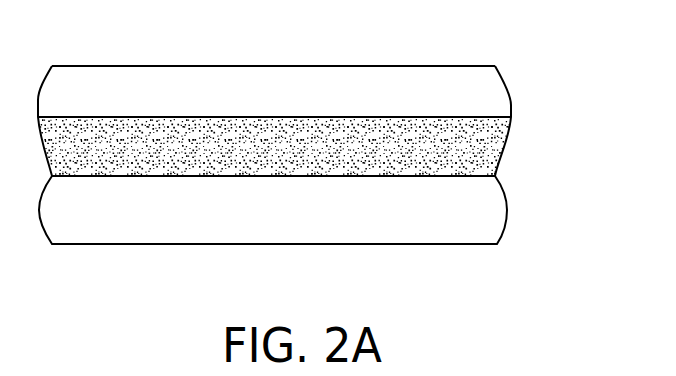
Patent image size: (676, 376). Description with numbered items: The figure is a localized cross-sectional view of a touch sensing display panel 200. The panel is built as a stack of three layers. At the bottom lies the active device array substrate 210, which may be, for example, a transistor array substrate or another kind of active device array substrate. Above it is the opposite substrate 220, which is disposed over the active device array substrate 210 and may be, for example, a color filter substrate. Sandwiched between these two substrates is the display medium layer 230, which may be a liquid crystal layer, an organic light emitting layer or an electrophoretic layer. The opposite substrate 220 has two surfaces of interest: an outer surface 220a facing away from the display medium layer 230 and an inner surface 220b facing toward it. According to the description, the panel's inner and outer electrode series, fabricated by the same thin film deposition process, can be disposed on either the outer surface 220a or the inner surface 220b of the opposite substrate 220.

The touch sensing display panel 200 is at (325, 160).
The active device array substrate 210 is at (450, 212).
The opposite substrate 220 is at (325, 58).
The outer surface 220a is at (233, 66).
The inner surface 220b is at (377, 116).
The display medium layer 230 is at (453, 145).